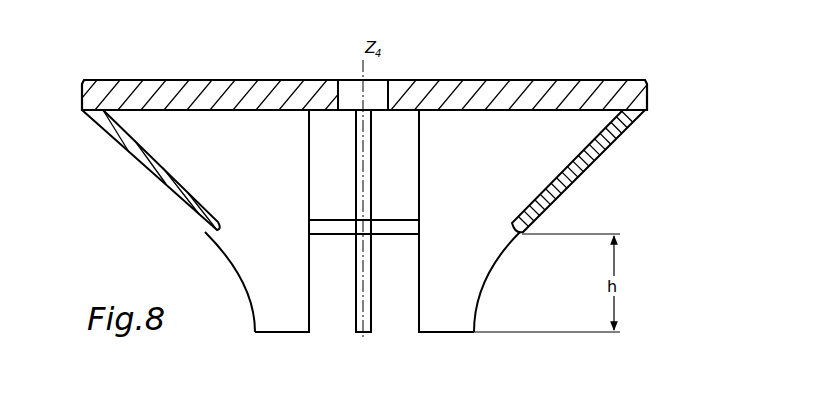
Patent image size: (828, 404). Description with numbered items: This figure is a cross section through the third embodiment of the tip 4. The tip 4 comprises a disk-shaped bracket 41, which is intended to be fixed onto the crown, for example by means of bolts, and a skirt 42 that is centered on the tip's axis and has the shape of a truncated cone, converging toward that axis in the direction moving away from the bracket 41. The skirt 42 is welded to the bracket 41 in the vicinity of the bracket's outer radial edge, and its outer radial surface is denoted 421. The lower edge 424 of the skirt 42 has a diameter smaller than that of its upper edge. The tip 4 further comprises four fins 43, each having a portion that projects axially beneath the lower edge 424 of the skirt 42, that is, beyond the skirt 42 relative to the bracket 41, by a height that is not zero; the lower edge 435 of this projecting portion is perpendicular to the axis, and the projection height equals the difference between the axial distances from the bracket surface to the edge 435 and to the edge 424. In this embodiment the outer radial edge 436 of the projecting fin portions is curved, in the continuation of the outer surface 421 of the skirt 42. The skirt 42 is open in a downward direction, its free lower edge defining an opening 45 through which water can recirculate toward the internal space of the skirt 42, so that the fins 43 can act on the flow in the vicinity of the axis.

The tip 4 is at (96, 168).
The bracket 41 is at (476, 92).
The skirt 42 is at (157, 174).
The outer radial surface 421 is at (591, 175).
The fin 43 is at (360, 153).
The lower edge 424 is at (341, 238).
The opening 45 is at (268, 234).
The lower edge 435 is at (441, 338).
The outer radial edge 436 is at (491, 285).